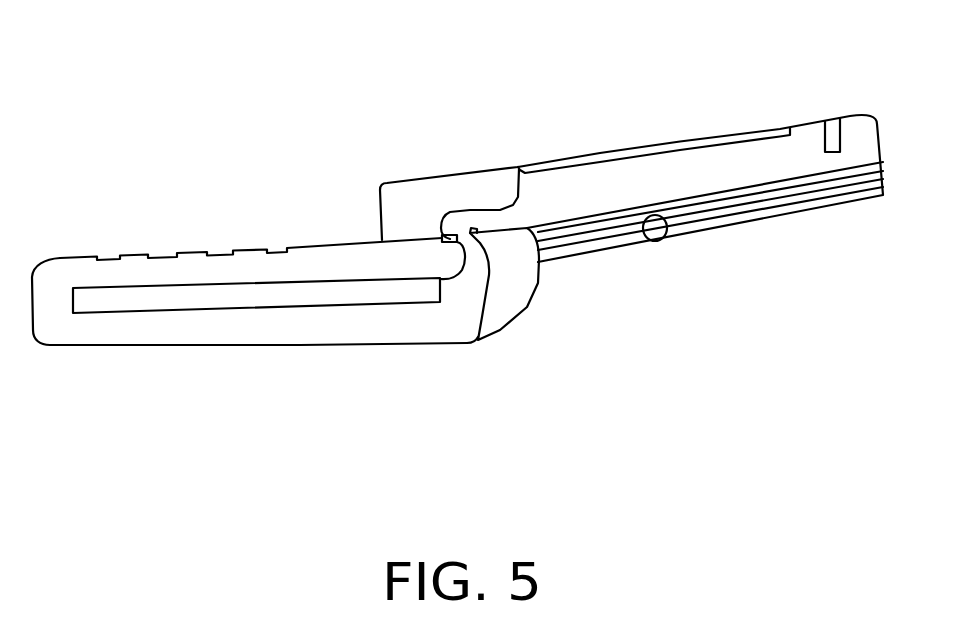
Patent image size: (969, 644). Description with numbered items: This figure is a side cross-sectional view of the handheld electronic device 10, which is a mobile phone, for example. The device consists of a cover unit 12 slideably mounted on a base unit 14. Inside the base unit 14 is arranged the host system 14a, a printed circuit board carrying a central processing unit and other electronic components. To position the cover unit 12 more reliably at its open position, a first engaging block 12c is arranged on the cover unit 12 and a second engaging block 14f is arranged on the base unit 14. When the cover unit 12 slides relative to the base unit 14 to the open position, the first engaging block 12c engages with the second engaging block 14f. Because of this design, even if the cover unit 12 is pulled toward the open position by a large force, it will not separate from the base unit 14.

The handheld electronic device 10 is at (750, 421).
The cover unit 12 is at (810, 143).
The first engaging block 12c is at (446, 238).
The base unit 14 is at (150, 267).
The host system 14a is at (283, 295).
The second engaging block 14f is at (479, 340).